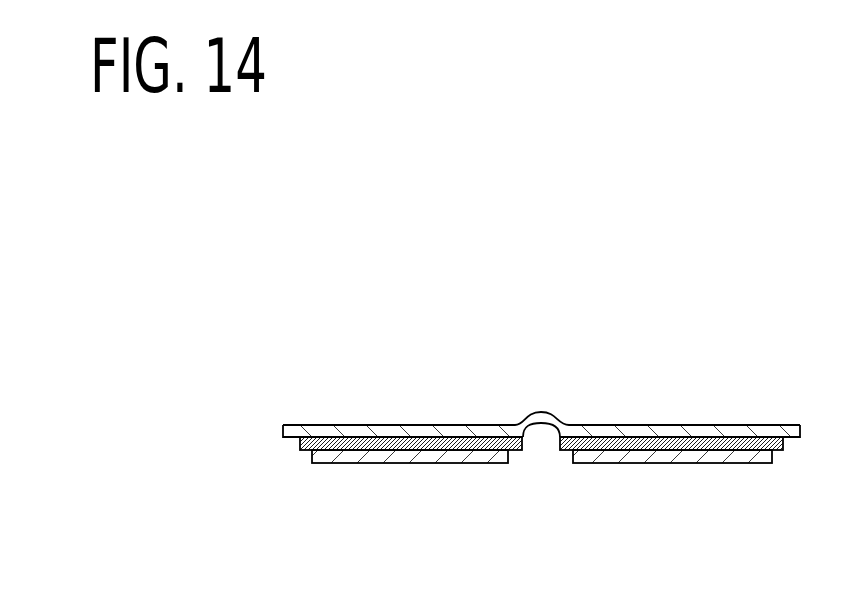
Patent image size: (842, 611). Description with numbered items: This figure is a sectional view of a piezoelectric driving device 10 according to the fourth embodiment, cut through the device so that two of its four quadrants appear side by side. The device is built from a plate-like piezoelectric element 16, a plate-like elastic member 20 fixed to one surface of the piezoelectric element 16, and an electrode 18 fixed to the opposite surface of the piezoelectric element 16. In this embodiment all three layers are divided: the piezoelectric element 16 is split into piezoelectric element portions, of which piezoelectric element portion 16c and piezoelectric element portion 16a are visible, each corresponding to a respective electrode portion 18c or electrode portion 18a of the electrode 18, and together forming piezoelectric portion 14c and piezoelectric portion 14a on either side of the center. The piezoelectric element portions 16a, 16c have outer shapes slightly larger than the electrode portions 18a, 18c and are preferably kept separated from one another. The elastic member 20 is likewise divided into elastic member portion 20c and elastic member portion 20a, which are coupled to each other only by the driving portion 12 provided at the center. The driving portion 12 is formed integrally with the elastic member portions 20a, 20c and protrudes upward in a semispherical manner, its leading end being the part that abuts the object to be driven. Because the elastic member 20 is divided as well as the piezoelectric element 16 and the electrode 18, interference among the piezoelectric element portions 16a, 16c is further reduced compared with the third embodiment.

The piezoelectric driving device 10 is at (512, 280).
The driving portion 12 is at (537, 420).
The piezoelectric portion 14a is at (777, 423).
The piezoelectric portion 14c is at (343, 425).
The piezoelectric element 16 is at (302, 453).
The piezoelectric element portion 16a is at (689, 440).
The piezoelectric element portion 16c is at (468, 440).
The electrode 18 is at (772, 455).
The electrode portion 18a is at (626, 458).
The electrode portion 18c is at (372, 455).
The elastic member 20 is at (283, 430).
The elastic member portion 20a is at (643, 432).
The elastic member portion 20c is at (418, 430).